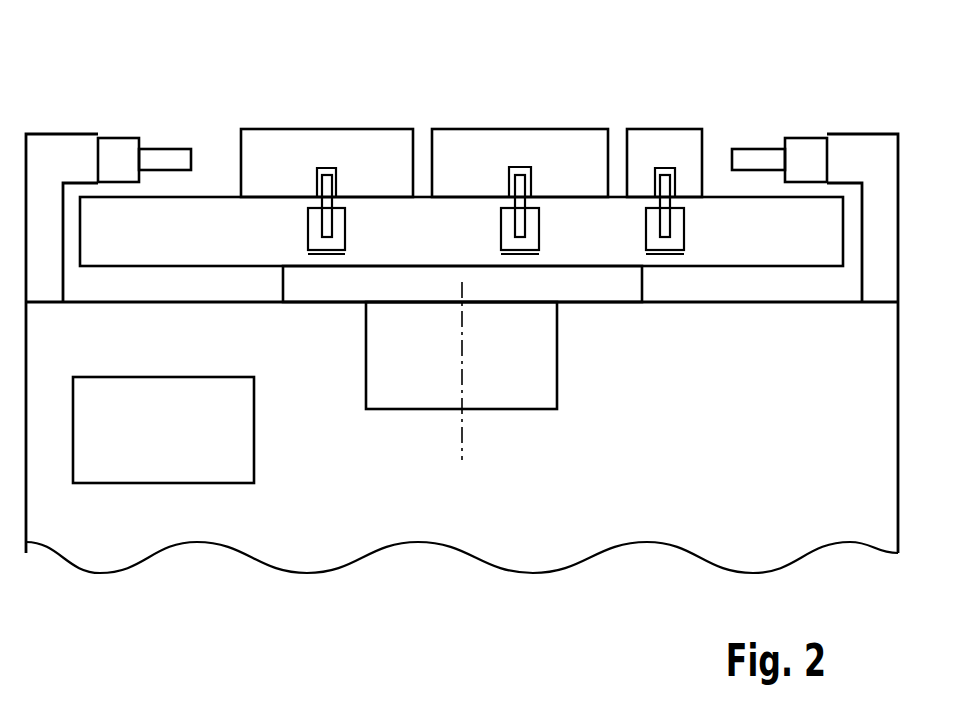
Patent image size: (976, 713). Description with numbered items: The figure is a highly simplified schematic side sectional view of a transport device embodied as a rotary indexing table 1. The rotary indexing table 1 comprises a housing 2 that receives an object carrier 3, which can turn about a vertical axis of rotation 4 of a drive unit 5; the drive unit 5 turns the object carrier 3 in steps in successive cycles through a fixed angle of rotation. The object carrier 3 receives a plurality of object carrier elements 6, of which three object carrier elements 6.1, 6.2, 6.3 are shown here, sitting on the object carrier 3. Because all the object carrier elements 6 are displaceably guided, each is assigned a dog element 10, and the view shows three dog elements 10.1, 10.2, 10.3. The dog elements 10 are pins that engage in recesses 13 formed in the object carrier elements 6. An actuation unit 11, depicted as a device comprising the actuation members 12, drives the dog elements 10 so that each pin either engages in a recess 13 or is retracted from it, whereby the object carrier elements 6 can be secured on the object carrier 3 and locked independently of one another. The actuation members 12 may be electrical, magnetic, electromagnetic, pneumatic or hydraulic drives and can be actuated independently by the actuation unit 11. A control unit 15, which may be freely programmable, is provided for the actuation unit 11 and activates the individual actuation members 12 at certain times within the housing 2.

The rotary indexing table 1 is at (483, 290).
The housing 2 is at (898, 422).
The object carrier 3 is at (216, 222).
The vertical axis of rotation 4 is at (462, 443).
The drive unit 5 is at (557, 350).
The object carrier element 6 is at (471, 113).
The object carrier element 6.1 is at (365, 145).
The object carrier element 6.2 is at (515, 145).
The object carrier element 6.3 is at (647, 148).
The dog element 10 is at (517, 133).
The dog element 10.1 is at (325, 188).
The dog element 10.2 is at (522, 201).
The dog element 10.3 is at (667, 188).
The actuation unit 11 is at (456, 210).
The actuation member 12 is at (119, 155).
The recess 13 is at (336, 181).
The control unit 15 is at (254, 425).